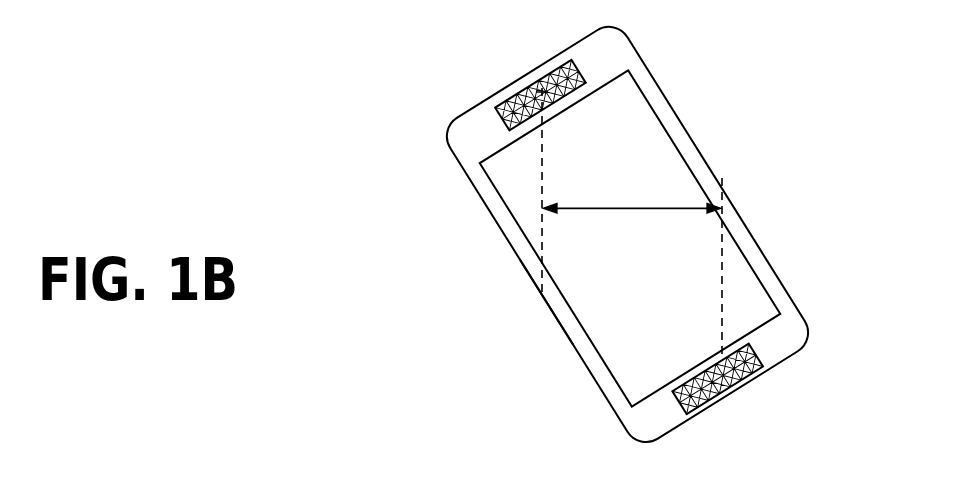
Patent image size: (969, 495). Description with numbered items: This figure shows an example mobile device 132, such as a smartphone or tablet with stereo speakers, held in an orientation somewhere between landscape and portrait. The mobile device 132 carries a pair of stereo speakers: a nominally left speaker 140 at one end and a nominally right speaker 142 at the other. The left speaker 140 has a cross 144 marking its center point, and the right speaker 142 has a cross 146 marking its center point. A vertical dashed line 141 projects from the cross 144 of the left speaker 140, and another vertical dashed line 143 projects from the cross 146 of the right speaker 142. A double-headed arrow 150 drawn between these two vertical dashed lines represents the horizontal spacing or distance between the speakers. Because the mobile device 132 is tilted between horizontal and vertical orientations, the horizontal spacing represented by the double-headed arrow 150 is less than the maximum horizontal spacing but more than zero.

The mobile device 132 is at (648, 144).
The left speaker 140 is at (556, 68).
The vertical dashed line 141 is at (720, 275).
The right speaker 142 is at (743, 372).
The vertical dashed line 143 is at (542, 263).
The cross 144 is at (719, 376).
The cross 146 is at (546, 100).
The double-headed arrow 150 is at (615, 209).